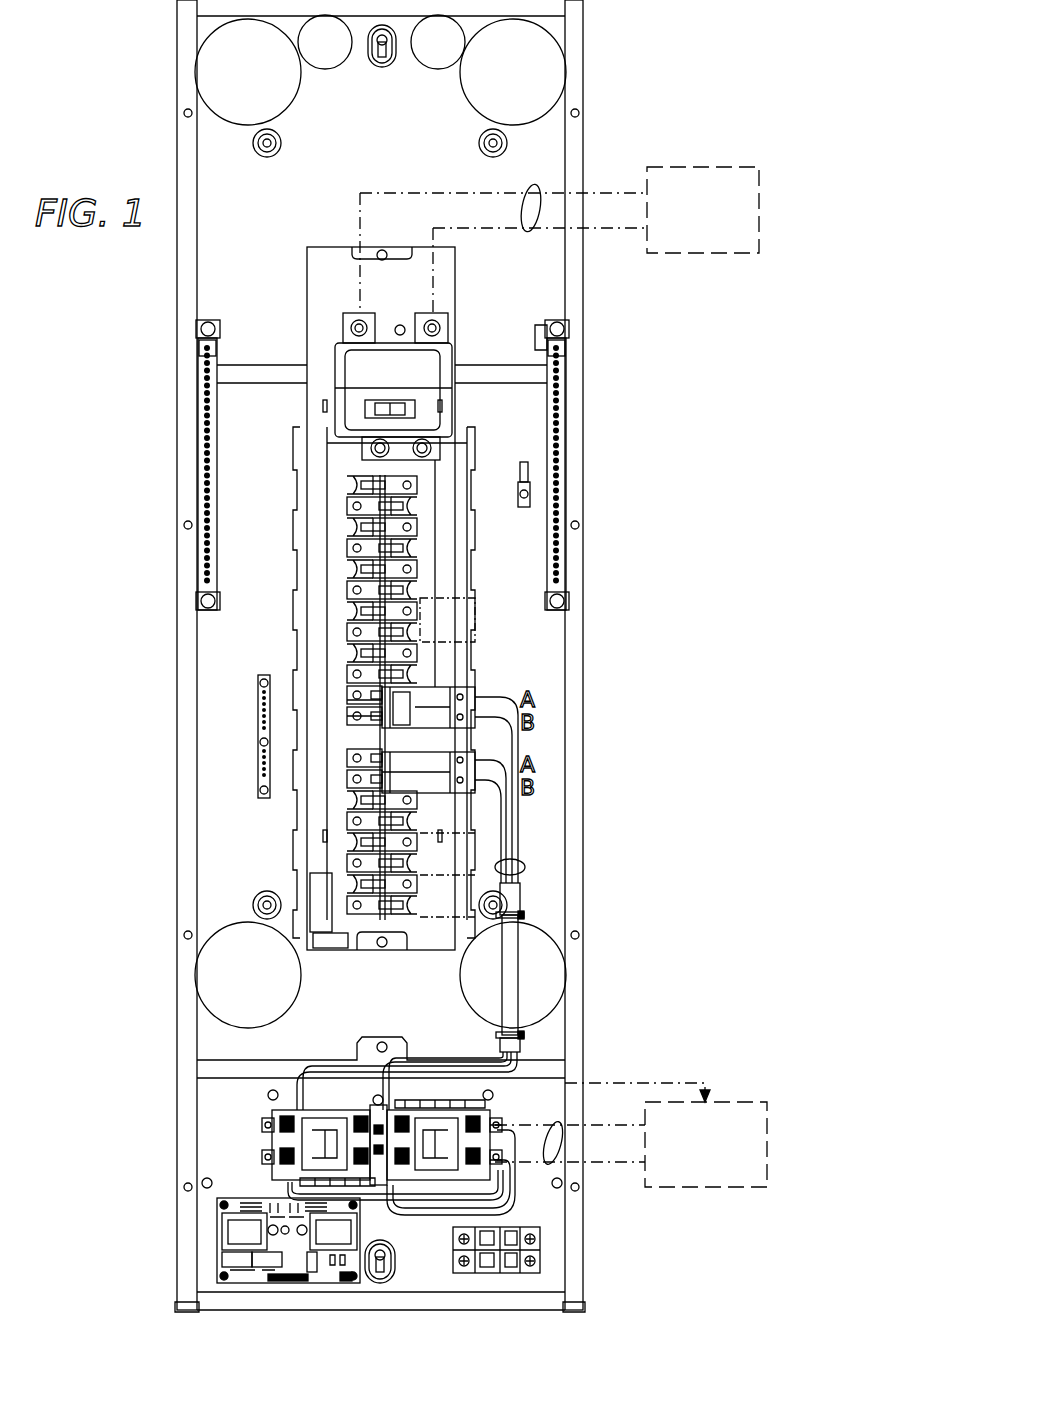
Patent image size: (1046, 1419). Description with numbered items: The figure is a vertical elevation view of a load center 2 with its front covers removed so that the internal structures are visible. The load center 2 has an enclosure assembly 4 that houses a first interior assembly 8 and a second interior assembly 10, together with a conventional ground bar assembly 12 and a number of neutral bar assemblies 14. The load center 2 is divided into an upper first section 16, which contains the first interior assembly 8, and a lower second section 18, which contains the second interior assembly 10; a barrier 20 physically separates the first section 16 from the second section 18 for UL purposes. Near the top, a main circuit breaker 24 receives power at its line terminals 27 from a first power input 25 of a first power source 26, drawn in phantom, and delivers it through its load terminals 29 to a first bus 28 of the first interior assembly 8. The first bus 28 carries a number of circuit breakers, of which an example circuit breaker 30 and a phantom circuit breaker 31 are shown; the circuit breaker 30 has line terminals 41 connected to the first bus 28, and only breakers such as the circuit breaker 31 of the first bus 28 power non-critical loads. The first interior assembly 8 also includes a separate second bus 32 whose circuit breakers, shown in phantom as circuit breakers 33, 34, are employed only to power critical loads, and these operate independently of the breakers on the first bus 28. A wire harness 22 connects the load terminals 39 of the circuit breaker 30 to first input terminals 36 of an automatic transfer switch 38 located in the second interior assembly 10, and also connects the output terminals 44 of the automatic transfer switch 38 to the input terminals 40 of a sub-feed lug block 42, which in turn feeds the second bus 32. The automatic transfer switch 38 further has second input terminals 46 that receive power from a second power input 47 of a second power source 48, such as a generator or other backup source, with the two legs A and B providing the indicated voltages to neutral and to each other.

The load center 2 is at (152, 41).
The enclosure assembly 4 is at (583, 72).
The first interior assembly 8 is at (307, 292).
The second interior assembly 10 is at (530, 1090).
The ground bar assembly 12 is at (258, 735).
The neutral bar assemblies 14 is at (198, 443).
The first section 16 is at (553, 672).
The second section 18 is at (557, 1238).
The barrier 20 is at (213, 1072).
The wire harness 22 is at (522, 870).
The main circuit breaker 24 is at (370, 372).
The first power input 25 is at (536, 184).
The first power source 26 is at (733, 254).
The line terminals 27 is at (434, 313).
The first bus 28 is at (425, 551).
The load terminals 29 is at (370, 447).
The circuit breaker 30 is at (432, 690).
The circuit breaker 31 is at (430, 611).
The second bus 32 is at (440, 818).
The circuit breaker 33 is at (500, 899).
The circuit breaker 34 is at (440, 858).
The first input terminals 36 is at (278, 1152).
The automatic transfer switch 38 is at (439, 1260).
The load terminals 39 is at (478, 716).
The input terminals 40 is at (478, 780).
The line terminals 41 is at (358, 714).
The sub-feed lug block 42 is at (412, 778).
The output terminals 44 is at (372, 1130).
The second input terminals 46 is at (496, 1161).
The second power input 47 is at (560, 1122).
The second power source 48 is at (712, 1187).